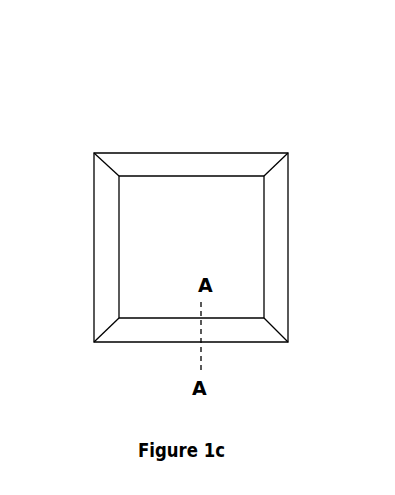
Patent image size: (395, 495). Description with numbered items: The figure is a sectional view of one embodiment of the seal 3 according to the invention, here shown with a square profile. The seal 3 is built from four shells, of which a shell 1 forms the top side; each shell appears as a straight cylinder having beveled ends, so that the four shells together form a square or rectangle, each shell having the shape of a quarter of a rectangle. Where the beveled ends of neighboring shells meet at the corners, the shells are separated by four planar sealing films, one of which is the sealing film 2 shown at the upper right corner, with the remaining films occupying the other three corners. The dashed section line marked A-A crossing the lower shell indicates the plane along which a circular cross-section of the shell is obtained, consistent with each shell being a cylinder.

The seal 3 is at (300, 92).
The shell 1 is at (192, 163).
The planar sealing film 2 is at (273, 163).